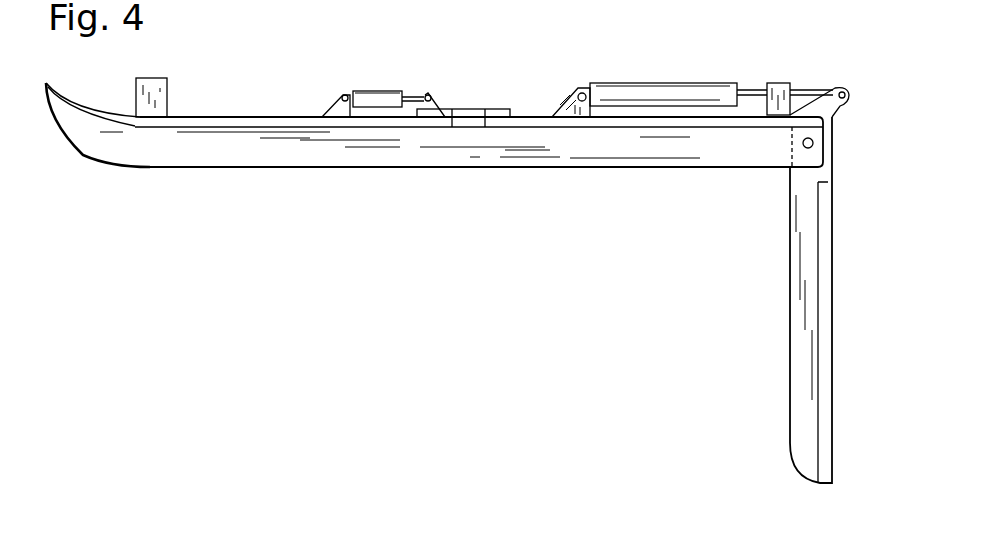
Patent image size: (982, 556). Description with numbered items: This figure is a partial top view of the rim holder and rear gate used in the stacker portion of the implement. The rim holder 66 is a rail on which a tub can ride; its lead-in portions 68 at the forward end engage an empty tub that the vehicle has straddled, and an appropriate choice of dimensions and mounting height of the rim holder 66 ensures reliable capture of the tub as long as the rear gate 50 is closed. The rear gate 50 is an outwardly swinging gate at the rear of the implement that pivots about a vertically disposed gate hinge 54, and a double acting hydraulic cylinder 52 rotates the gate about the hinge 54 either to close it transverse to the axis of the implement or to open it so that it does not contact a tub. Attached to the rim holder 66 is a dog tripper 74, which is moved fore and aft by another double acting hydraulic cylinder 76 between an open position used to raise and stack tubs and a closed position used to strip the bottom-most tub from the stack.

The rear gate 50 is at (807, 267).
The double acting hydraulic cylinder 52 is at (665, 82).
The gate hinge 54 is at (813, 143).
The rim holder 66 is at (478, 158).
The lead-in portions 68 is at (87, 143).
The dog tripper 74 is at (450, 110).
The double acting hydraulic cylinder 76 is at (382, 93).